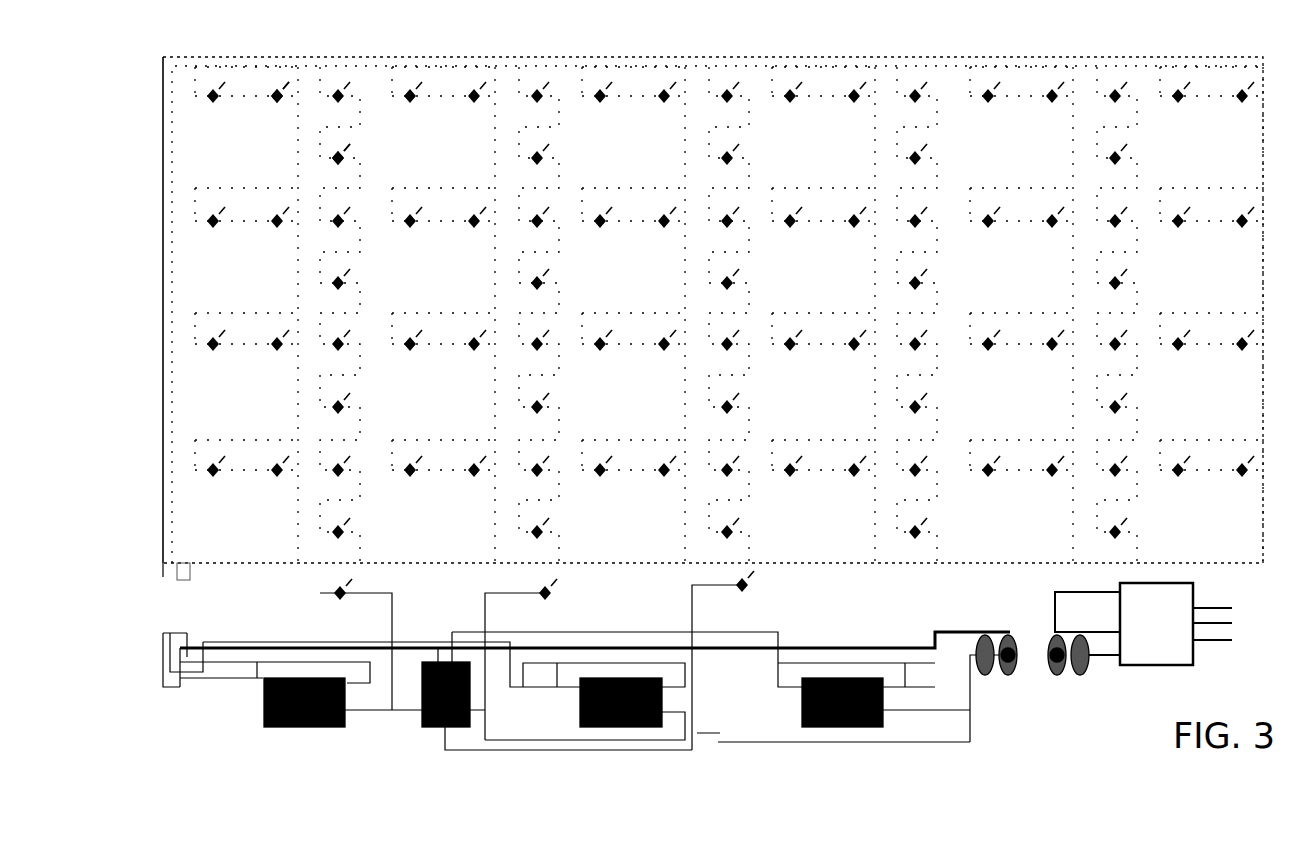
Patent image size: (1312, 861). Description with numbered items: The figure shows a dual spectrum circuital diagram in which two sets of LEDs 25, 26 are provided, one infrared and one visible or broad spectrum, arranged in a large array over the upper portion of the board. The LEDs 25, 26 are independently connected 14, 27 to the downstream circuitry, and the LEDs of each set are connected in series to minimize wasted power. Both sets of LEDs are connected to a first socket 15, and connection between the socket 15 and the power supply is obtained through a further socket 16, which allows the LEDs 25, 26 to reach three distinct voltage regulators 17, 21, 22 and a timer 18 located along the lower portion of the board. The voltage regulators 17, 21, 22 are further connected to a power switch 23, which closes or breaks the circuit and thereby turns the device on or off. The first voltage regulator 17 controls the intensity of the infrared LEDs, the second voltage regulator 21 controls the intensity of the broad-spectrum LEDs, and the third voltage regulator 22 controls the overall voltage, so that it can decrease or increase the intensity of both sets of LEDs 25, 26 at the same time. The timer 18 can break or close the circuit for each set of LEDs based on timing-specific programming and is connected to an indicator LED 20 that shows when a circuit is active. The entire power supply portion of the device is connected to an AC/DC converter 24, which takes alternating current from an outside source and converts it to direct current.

The connection 14 is at (162, 300).
The first socket 15 is at (153, 580).
The further socket 16 is at (152, 627).
The first voltage regulator 17 is at (258, 705).
The timer 18 is at (420, 717).
The indicator LED 20 is at (557, 592).
The second voltage regulator 21 is at (578, 700).
The third voltage regulator 22 is at (875, 727).
The power switch 23 is at (723, 713).
The AC/DC converter 24 is at (1142, 670).
The infrared LED set 25 is at (275, 96).
The broad-spectrum LED set 26 is at (350, 150).
The connection 27 is at (175, 302).